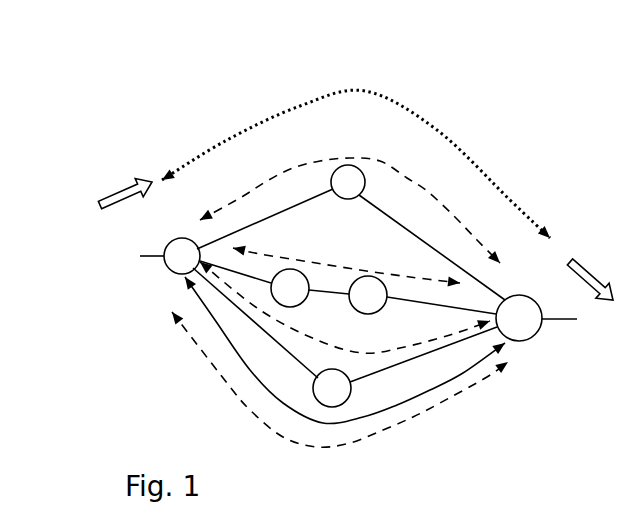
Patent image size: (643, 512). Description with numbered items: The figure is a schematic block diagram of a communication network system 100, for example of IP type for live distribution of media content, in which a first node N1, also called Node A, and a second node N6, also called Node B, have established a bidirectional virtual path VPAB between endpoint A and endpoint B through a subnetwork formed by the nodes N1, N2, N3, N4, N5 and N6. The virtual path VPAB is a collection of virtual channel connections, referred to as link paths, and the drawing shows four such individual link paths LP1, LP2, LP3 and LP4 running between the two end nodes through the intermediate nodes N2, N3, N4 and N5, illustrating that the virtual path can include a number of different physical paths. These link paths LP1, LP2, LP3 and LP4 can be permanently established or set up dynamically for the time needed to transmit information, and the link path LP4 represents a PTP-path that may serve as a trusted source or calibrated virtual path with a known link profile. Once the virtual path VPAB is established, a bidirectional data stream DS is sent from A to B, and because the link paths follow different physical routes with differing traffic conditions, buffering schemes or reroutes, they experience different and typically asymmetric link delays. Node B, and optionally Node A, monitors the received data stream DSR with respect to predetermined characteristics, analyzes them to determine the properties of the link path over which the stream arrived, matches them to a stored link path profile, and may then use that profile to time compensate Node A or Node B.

The communication network system 100 is at (560, 74).
The first node N1 is at (182, 256).
The node N2 is at (348, 182).
The node N3 is at (290, 288).
The node N4 is at (368, 295).
The node N5 is at (332, 388).
The second node N6 is at (519, 318).
The Node A is at (147, 235).
The Node B is at (571, 324).
The link path LP1 is at (350, 195).
The link path LP2 is at (346, 262).
The link path LP3 is at (345, 307).
The link path LP4 is at (340, 392).
The bidirectional virtual path VPAB is at (404, 92).
The bidirectional data stream DS is at (118, 179).
The received data stream DSR is at (599, 264).